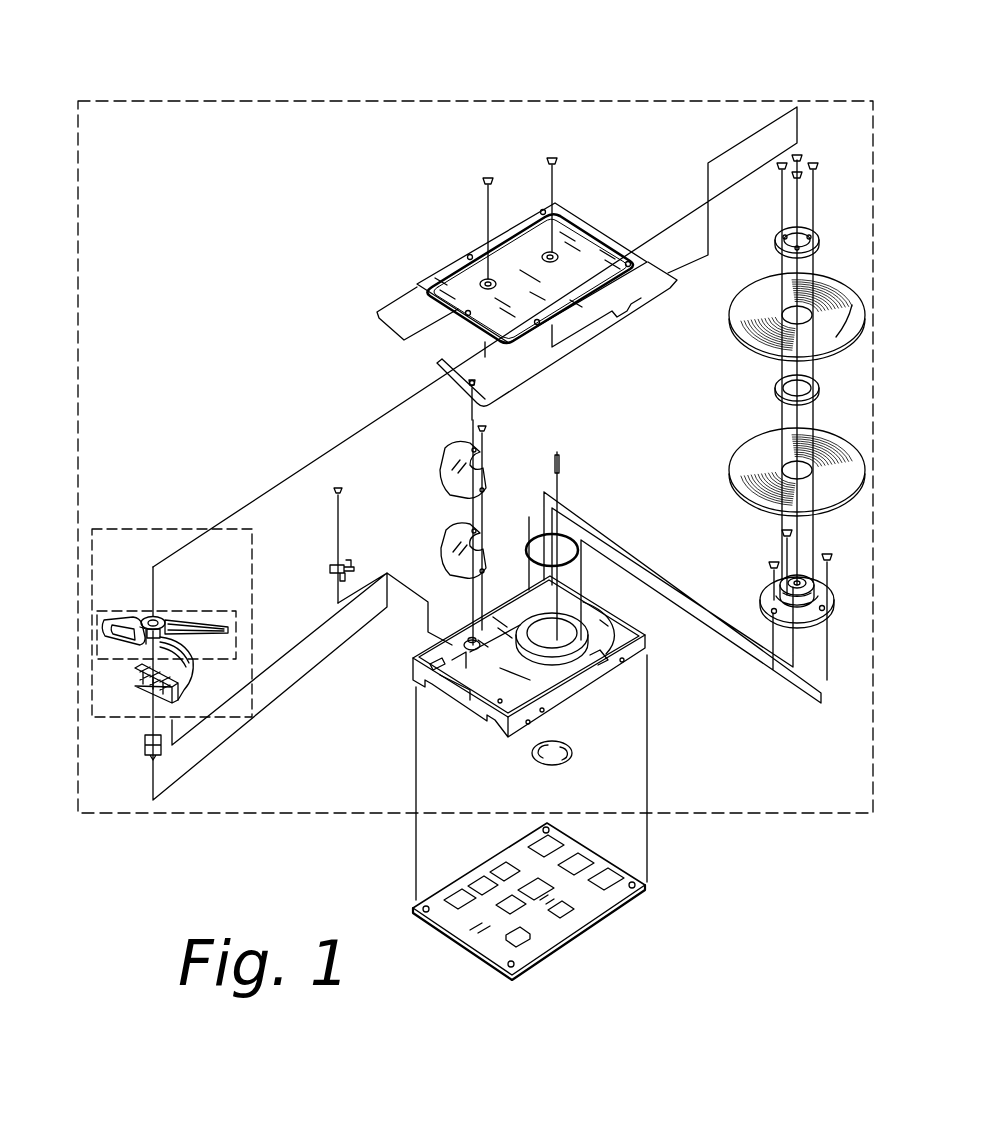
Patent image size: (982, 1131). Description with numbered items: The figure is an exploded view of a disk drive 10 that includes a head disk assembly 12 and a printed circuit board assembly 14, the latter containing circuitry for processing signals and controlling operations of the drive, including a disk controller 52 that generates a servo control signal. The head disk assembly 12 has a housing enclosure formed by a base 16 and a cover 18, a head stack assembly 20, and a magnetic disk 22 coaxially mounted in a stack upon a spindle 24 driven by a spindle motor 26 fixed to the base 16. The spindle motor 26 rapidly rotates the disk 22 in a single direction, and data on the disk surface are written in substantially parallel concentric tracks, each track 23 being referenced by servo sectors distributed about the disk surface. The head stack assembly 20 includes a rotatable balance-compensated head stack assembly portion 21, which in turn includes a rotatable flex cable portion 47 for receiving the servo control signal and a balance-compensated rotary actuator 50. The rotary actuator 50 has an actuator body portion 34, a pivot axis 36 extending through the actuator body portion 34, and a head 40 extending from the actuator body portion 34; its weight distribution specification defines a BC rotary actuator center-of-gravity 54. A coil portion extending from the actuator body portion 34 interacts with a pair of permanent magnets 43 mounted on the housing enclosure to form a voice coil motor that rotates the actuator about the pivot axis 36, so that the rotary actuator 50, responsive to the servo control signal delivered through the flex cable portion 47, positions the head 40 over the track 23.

The disk drive 10 is at (353, 60).
The head disk assembly 12 is at (762, 815).
The printed circuit board assembly 14 is at (578, 932).
The base 16 is at (590, 690).
The cover 18 is at (440, 263).
The head stack assembly 20 is at (133, 529).
The rotatable balance-compensated head stack assembly portion 21 is at (213, 606).
The disk 22 is at (750, 290).
The track 23 is at (852, 305).
The spindle 24 is at (810, 580).
The spindle motor 26 is at (768, 595).
The actuator body portion 34 is at (100, 631).
The pivot axis 36 is at (145, 609).
The head 40 is at (236, 633).
The permanent magnets 43 is at (446, 458).
The rotatable flex cable portion 47 is at (192, 658).
The balance-compensated rotary actuator 50 is at (140, 614).
The disk controller 52 is at (537, 887).
The BC rotary actuator center-of-gravity 54 is at (166, 611).